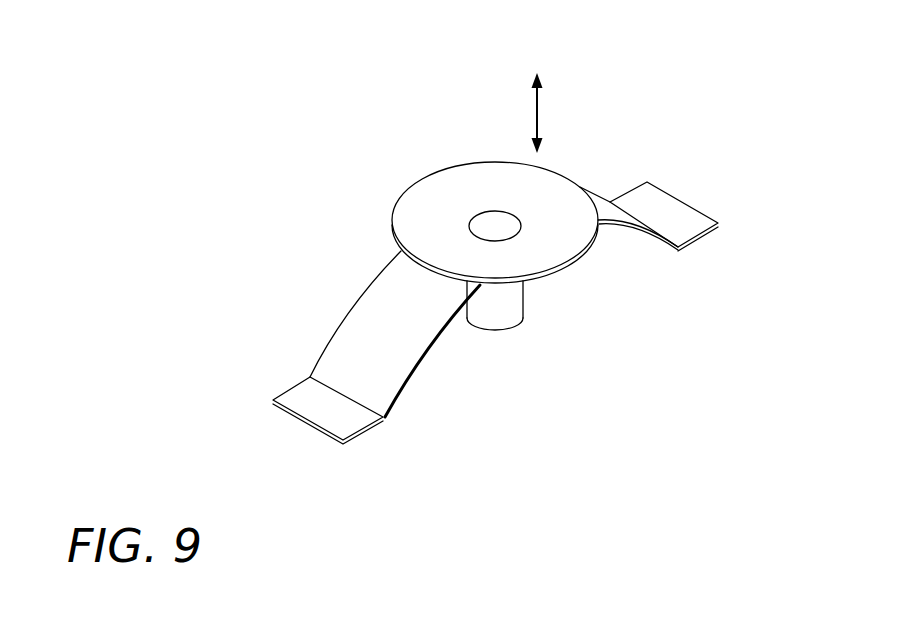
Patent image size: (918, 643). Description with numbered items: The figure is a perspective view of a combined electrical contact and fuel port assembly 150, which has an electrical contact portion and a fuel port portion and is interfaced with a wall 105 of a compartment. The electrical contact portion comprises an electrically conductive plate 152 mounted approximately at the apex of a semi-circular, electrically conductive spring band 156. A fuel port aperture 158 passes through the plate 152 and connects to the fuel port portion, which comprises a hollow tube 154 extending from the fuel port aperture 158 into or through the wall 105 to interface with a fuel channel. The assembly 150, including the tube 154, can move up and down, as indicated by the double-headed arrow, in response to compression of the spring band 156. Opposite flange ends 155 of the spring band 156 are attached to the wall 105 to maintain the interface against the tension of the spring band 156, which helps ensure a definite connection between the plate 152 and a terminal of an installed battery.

The wall 105 is at (714, 333).
The combined electrical contact and fuel port assembly 150 is at (393, 45).
The electrically conductive plate 152 is at (402, 210).
The hollow tube 154 is at (512, 303).
The flange ends 155 is at (305, 405).
The spring band 156 is at (368, 318).
The fuel port aperture 158 is at (485, 198).